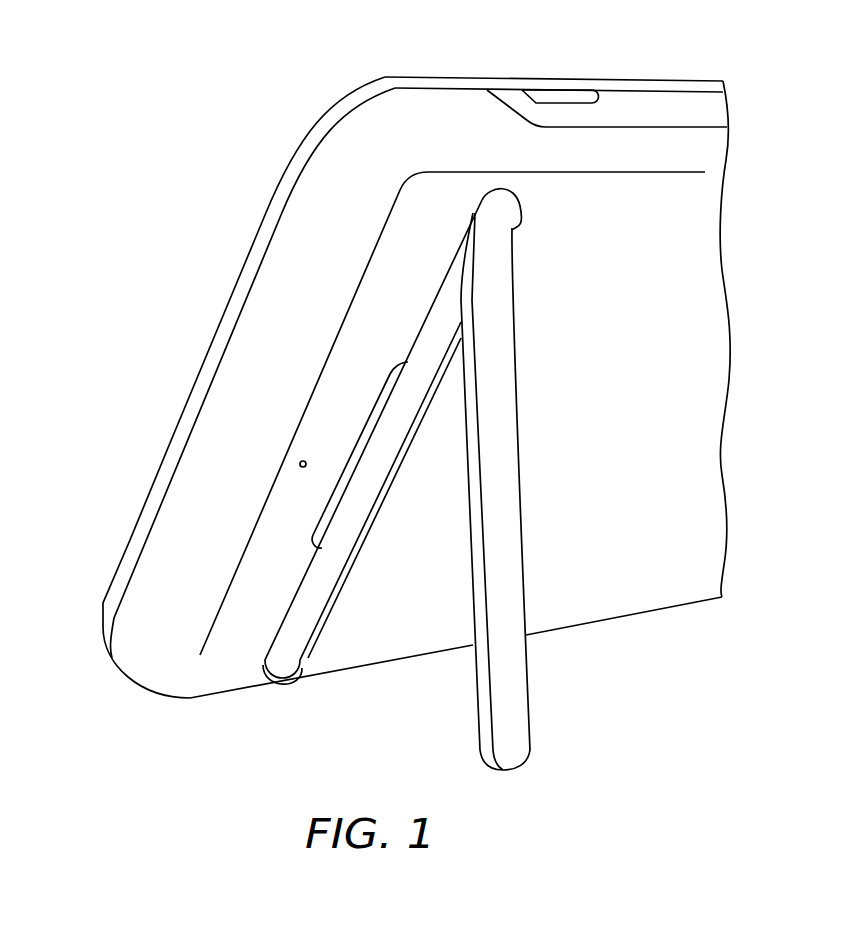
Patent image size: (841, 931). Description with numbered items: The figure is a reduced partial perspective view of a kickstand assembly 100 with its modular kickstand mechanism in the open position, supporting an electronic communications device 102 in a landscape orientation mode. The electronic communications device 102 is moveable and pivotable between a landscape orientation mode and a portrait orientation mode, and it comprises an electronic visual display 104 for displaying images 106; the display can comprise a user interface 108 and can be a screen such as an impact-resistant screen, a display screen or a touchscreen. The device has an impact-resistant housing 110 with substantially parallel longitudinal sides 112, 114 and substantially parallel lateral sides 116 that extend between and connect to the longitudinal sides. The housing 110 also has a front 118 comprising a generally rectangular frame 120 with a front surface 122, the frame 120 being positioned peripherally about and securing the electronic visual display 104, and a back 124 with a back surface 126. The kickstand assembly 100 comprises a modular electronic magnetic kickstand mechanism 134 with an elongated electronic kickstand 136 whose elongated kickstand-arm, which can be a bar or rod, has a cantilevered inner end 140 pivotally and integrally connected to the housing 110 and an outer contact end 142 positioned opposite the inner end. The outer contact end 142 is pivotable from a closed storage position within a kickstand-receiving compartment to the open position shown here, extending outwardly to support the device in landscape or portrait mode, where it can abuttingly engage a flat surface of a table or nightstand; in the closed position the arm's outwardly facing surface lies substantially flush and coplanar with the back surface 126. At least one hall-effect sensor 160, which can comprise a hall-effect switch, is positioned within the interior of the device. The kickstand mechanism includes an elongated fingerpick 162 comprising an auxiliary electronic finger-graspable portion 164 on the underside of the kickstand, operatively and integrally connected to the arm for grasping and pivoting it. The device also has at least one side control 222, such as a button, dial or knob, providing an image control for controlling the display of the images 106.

The kickstand assembly 100 is at (553, 303).
The electronic communications device 102 is at (158, 678).
The electronic visual display 104 is at (300, 461).
The images 106 is at (133, 543).
The user interface 108 is at (312, 253).
The impact-resistant housing 110 is at (127, 648).
The longitudinal side 112 is at (667, 78).
The longitudinal side 114 is at (692, 604).
The lateral sides 116 is at (347, 167).
The front 118 is at (260, 335).
The generally rectangular frame 120 is at (393, 110).
The front surface 122 is at (178, 492).
The back 124 is at (662, 483).
The back surface 126 is at (602, 230).
The modular electronic magnetic kickstand mechanism 134 is at (498, 247).
The elongated electronic kickstand 136 is at (509, 553).
The cantilevered inner end 140 is at (595, 414).
The outer contact end 142 is at (478, 752).
The hall-effect sensor 160 is at (607, 360).
The elongated fingerpick 162 is at (493, 490).
The auxiliary electronic finger-graspable portion 164 is at (473, 450).
The side control 222 is at (564, 96).